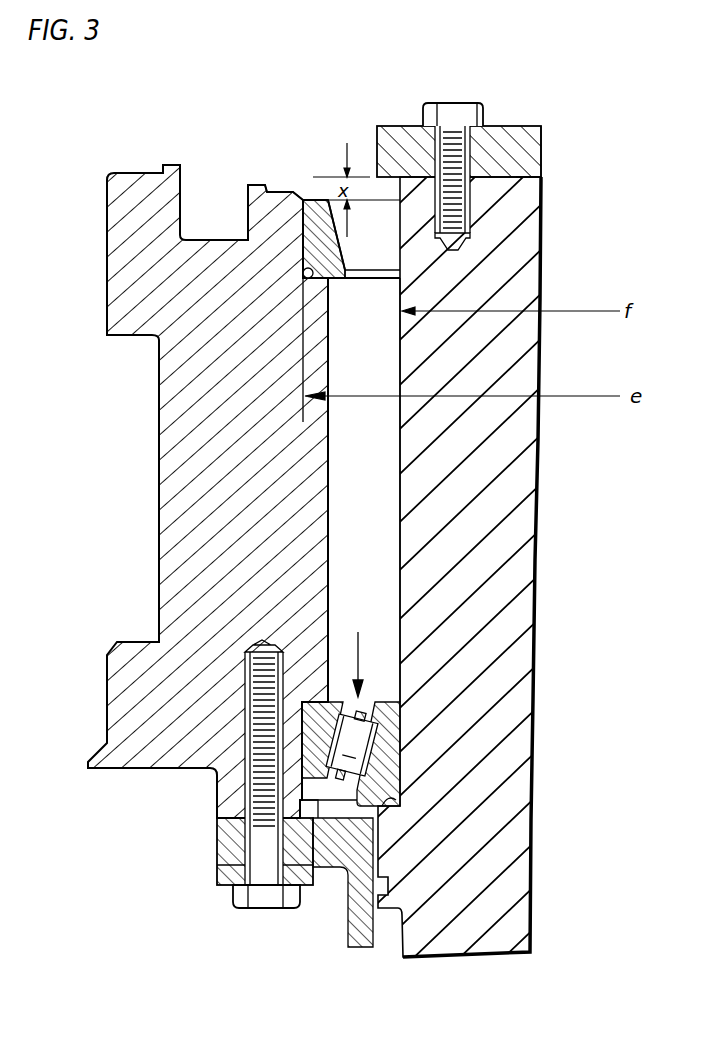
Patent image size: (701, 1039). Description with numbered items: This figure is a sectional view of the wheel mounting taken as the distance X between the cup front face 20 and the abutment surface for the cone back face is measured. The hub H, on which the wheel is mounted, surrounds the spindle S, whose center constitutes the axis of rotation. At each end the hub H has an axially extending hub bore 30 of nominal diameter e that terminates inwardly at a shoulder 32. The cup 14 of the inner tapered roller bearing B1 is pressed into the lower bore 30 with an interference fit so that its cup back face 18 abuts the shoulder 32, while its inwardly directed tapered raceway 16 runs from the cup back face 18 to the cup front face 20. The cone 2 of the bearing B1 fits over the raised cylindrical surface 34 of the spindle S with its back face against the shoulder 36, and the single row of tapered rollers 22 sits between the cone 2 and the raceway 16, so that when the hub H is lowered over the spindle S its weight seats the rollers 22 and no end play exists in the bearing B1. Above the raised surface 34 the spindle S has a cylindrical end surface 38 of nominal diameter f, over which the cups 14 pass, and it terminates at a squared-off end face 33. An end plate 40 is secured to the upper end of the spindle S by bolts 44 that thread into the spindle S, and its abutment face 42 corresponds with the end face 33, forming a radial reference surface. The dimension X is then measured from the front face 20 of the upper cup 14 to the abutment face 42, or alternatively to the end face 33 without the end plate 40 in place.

The cone 2 is at (387, 760).
The cup 14 is at (315, 218).
The tapered raceway 16 is at (343, 249).
The cup back face 18 is at (330, 280).
The cup front face 20 is at (325, 200).
The tapered rollers 22 is at (352, 746).
The hub bore 30 is at (307, 233).
The shoulder 32 is at (303, 268).
The end face 33 is at (516, 175).
The raised cylindrical surface 34 is at (397, 720).
The shoulder 36 is at (387, 800).
The cylindrical end surface 38 is at (393, 233).
The end plate 40 is at (393, 126).
The abutment face 42 is at (392, 180).
The bolts 44 is at (465, 103).
The hub H is at (160, 500).
The spindle S is at (527, 257).
The inner tapered roller bearing B1 is at (358, 648).